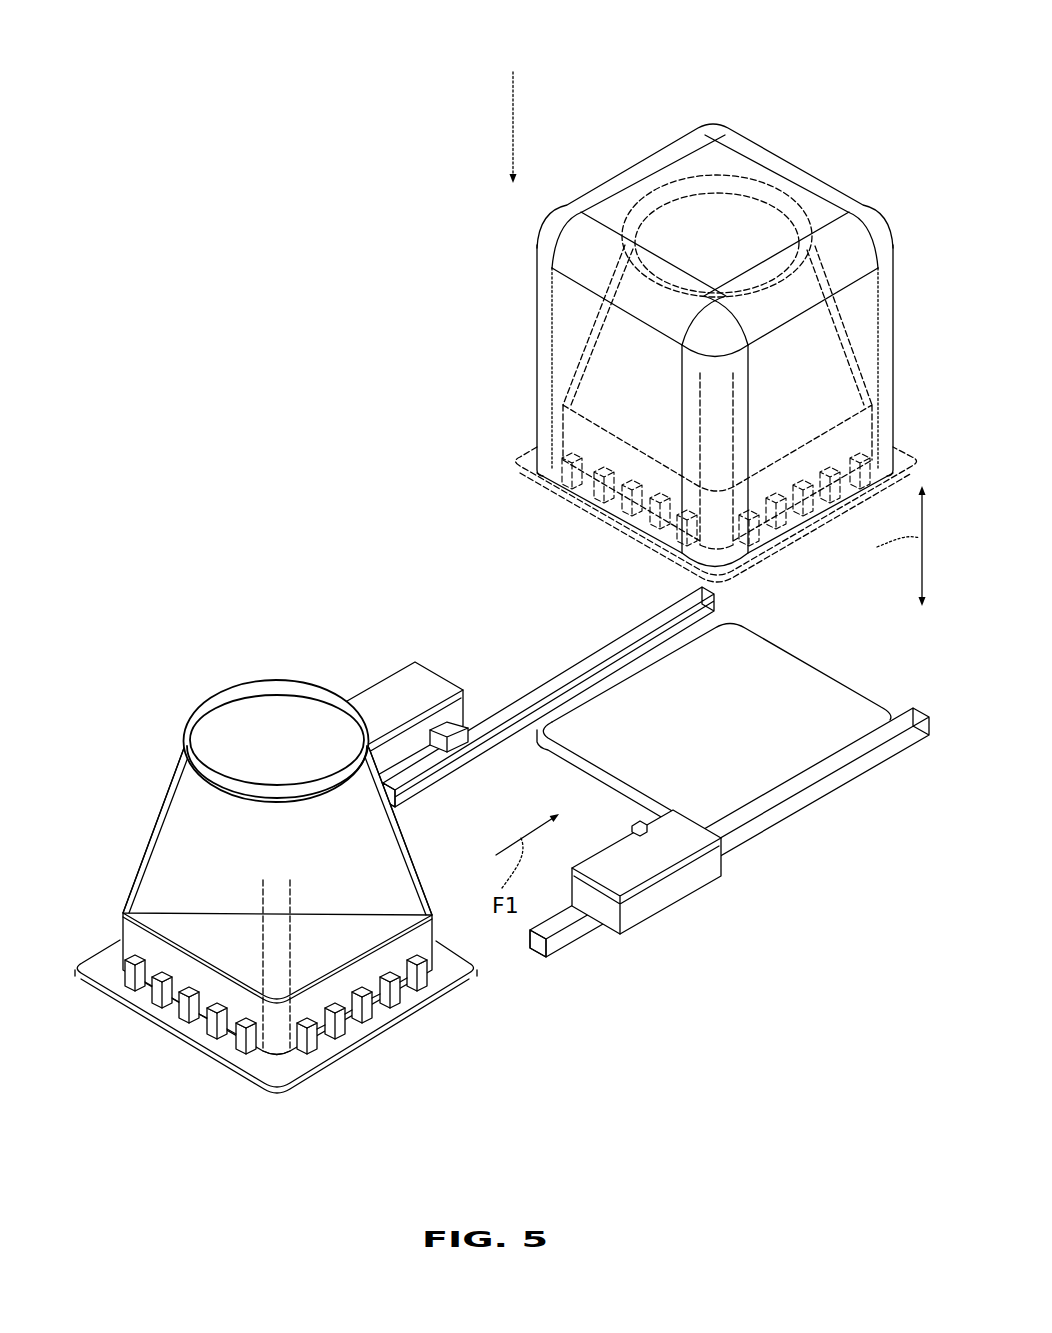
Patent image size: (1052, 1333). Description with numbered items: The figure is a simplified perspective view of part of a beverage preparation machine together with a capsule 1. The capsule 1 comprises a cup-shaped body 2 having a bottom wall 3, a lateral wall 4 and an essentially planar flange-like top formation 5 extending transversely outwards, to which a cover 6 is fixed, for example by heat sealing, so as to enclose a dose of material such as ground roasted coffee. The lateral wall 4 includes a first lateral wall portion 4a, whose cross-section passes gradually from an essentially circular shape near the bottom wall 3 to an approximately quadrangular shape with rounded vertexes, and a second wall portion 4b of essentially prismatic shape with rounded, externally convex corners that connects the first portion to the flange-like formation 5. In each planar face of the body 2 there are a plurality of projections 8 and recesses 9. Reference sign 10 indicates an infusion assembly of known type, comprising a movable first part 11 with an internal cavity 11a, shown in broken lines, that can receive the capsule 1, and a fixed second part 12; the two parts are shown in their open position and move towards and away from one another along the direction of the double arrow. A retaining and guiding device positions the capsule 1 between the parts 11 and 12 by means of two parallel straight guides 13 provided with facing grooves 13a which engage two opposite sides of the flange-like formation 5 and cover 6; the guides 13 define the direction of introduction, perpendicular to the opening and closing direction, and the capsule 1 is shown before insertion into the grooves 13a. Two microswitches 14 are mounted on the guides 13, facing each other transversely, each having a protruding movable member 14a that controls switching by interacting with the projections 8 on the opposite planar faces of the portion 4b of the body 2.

The capsule 1 is at (176, 701).
The cup-shaped body 2 is at (152, 816).
The bottom wall 3 is at (260, 720).
The lateral wall 4 is at (376, 850).
The first lateral wall portion 4a is at (163, 790).
The second wall portion 4b is at (121, 931).
The flange-like top formation 5 is at (103, 968).
The cover 6 is at (263, 1060).
The projections 8 is at (150, 1005).
The recesses 9 is at (183, 1008).
The infusion assembly 10 is at (813, 133).
The first part 11 is at (535, 432).
The cavity 11a is at (613, 343).
The second part 12 is at (776, 668).
The straight guides 13 is at (601, 640).
The grooves 13a is at (462, 807).
The microswitches 14 is at (417, 680).
The movable member 14a is at (637, 827).